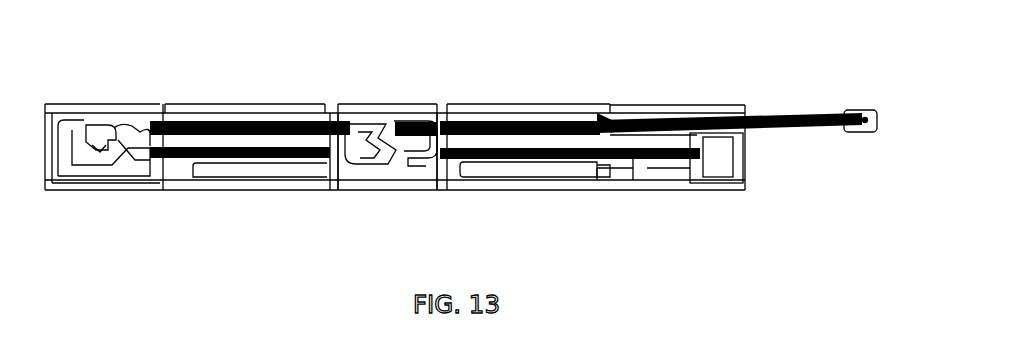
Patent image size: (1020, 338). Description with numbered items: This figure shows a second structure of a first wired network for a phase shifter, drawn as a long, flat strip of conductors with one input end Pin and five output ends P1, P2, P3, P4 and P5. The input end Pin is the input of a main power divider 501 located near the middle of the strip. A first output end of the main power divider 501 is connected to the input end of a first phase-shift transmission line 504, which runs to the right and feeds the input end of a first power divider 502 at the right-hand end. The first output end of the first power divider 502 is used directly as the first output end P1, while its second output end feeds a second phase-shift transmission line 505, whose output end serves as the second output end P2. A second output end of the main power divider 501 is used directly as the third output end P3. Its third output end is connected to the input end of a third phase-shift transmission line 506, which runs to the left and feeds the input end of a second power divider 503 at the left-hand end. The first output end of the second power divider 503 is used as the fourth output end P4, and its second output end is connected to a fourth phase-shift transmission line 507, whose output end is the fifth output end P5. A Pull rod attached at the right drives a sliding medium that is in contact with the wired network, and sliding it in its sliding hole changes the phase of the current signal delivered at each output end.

The main power divider 501 is at (391, 123).
The first power divider 502 is at (702, 155).
The second power divider 503 is at (100, 165).
The first phase-shift transmission line 504 is at (547, 132).
The second phase-shift transmission line 505 is at (543, 155).
The third phase-shift transmission line 506 is at (256, 127).
The fourth phase-shift transmission line 507 is at (182, 150).
The first output end P1 is at (633, 175).
The second output end P2 is at (460, 170).
The third output end P3 is at (368, 170).
The fourth output end P4 is at (53, 165).
The fifth output end P5 is at (248, 175).
The input end Pin is at (401, 170).
The pull rod Pull rod is at (866, 118).